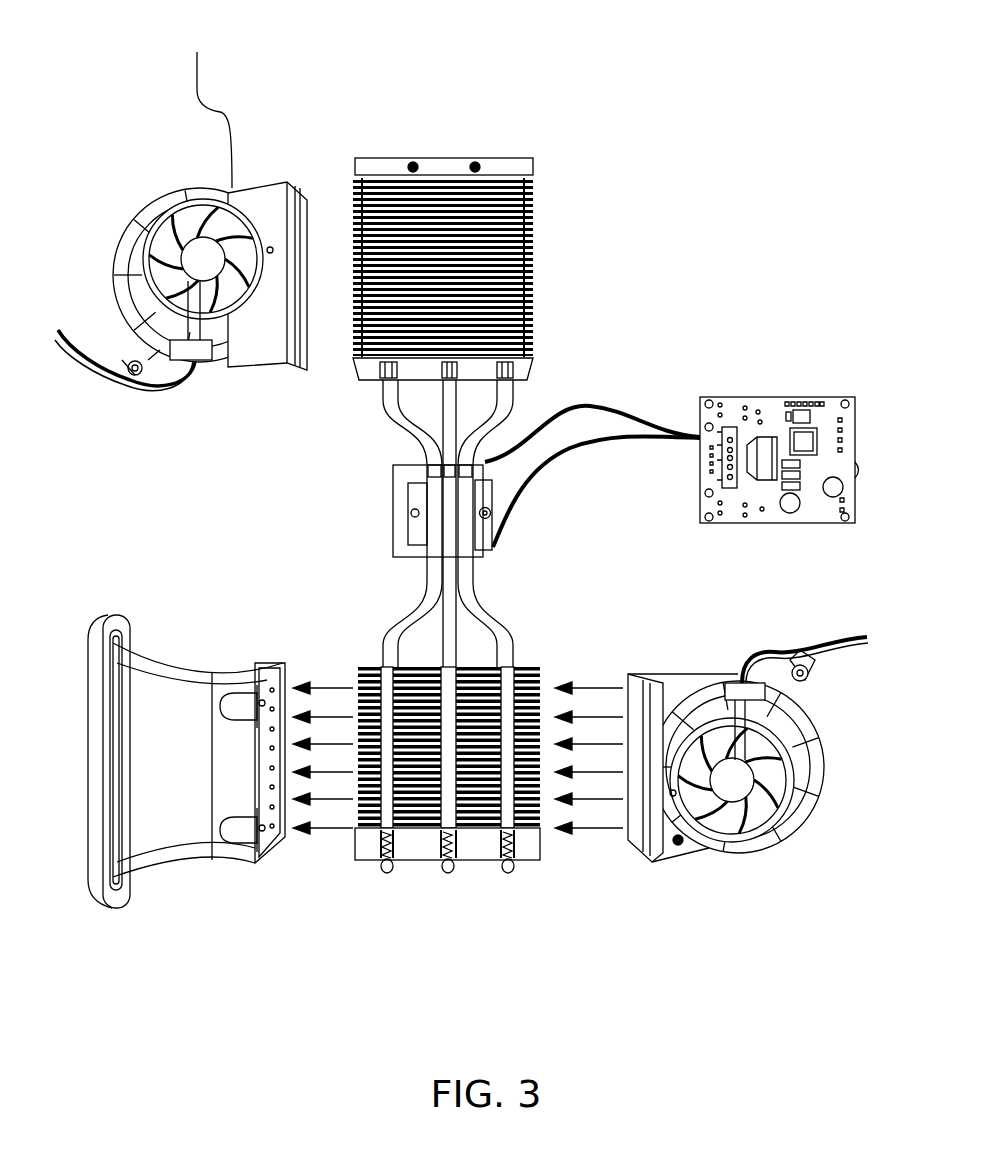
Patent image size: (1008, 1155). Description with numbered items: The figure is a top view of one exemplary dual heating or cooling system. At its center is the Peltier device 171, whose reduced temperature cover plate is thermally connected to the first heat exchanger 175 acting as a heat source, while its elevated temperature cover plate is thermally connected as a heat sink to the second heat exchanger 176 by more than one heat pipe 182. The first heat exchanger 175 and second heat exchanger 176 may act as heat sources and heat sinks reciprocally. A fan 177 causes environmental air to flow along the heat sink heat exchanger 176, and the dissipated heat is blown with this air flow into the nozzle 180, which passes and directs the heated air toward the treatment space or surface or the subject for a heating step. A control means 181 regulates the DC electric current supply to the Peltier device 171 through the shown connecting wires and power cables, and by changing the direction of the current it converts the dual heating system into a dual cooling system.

The first heat exchanger 175 is at (451, 158).
The heat pipe 182 is at (425, 432).
The Peltier device 171 is at (493, 497).
The means configured to control the DC electric current supply 181 is at (783, 397).
The second heat exchanger 176 is at (420, 860).
The nozzle 180 is at (178, 865).
The fan 177 is at (740, 857).